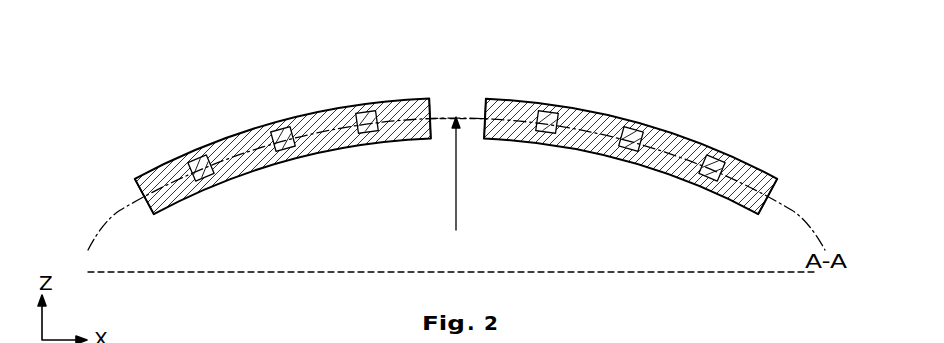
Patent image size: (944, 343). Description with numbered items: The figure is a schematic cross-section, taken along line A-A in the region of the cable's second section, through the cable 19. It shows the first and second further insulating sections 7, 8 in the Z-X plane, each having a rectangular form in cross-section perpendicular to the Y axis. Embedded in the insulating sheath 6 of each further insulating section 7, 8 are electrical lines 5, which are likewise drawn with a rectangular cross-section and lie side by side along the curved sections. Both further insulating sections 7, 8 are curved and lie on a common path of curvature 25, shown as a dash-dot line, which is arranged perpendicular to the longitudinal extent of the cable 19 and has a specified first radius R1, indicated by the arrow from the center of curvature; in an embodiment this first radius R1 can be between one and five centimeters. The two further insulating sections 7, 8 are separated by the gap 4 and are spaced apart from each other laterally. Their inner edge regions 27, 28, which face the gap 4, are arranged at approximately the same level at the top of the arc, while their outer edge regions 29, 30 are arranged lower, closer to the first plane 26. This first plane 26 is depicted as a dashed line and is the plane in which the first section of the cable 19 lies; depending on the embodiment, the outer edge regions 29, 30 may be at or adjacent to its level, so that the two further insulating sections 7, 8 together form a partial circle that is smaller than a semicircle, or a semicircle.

The gap 4 is at (455, 82).
The electrical lines 5 is at (202, 180).
The insulating sheath 6 is at (253, 125).
The first further insulating section 7 is at (207, 125).
The second further insulating section 8 is at (688, 113).
The cable 19 is at (472, 157).
The path of curvature 25 is at (129, 207).
The first plane 26 is at (755, 274).
The inner edge region of the first further insulating section 27 is at (428, 104).
The inner edge region of the second further insulating section 28 is at (485, 105).
The outer edge region of the first further insulating section 29 is at (134, 188).
The outer edge region of the second further insulating section 30 is at (779, 182).
The first radius R1 is at (457, 190).